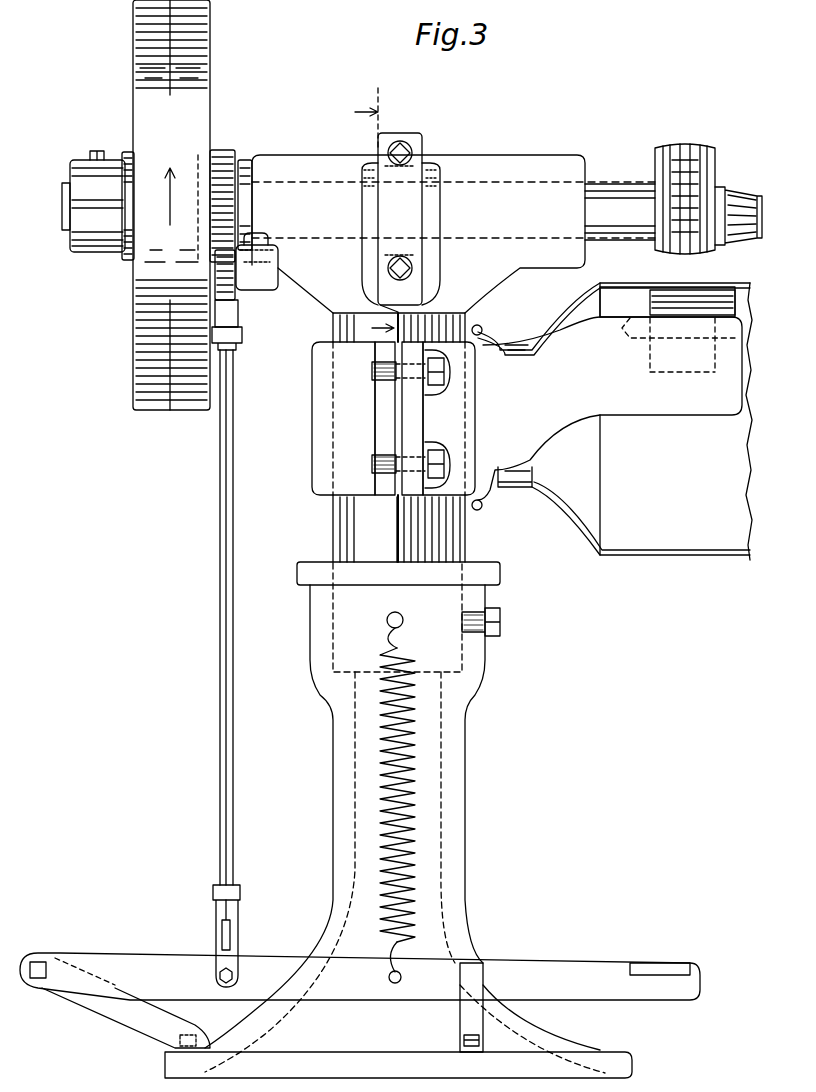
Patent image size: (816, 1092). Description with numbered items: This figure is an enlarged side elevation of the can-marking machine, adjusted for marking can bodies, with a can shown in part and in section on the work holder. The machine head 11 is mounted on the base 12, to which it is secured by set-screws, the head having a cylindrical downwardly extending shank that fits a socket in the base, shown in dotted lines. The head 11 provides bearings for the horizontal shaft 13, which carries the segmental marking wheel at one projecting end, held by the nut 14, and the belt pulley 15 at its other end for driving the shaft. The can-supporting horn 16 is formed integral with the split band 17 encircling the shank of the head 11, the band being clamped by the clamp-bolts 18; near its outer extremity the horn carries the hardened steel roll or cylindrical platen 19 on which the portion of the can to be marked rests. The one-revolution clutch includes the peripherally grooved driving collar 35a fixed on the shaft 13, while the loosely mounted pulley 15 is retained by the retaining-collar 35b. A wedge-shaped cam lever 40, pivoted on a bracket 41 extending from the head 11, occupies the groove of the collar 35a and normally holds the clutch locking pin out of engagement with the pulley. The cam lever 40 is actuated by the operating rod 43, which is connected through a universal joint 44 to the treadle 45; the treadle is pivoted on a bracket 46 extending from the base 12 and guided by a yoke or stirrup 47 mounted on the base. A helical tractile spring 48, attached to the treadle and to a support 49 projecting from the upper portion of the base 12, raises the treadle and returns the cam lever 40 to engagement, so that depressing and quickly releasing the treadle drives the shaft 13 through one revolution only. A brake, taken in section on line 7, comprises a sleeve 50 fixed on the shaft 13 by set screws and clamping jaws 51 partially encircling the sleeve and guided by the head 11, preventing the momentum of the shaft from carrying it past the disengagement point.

The section line 7 is at (373, 108).
The machine head 11 is at (418, 358).
The base 12 is at (398, 820).
The horizontal shaft 13 is at (62, 207).
The nut 14 is at (748, 212).
The belt pulley 15 is at (171, 205).
The can-supporting horn 16 is at (612, 421).
The band 17 is at (393, 418).
The clamp-bolts 18 is at (445, 458).
The cylindrical platen 19 is at (700, 302).
The driving collar 35a is at (230, 165).
The retaining-collar 35b is at (97, 195).
The cam lever 40 is at (230, 270).
The bracket 41 is at (257, 261).
The operating rod 43 is at (236, 640).
The universal joint 44 is at (238, 952).
The treadle 45 is at (360, 976).
The bracket 46 is at (126, 1018).
The yoke or stirrup 47 is at (459, 1022).
The helical tractile spring 48 is at (412, 815).
The support 49 is at (403, 617).
The sleeve 50 is at (365, 215).
The clamping jaws 51 is at (400, 222).